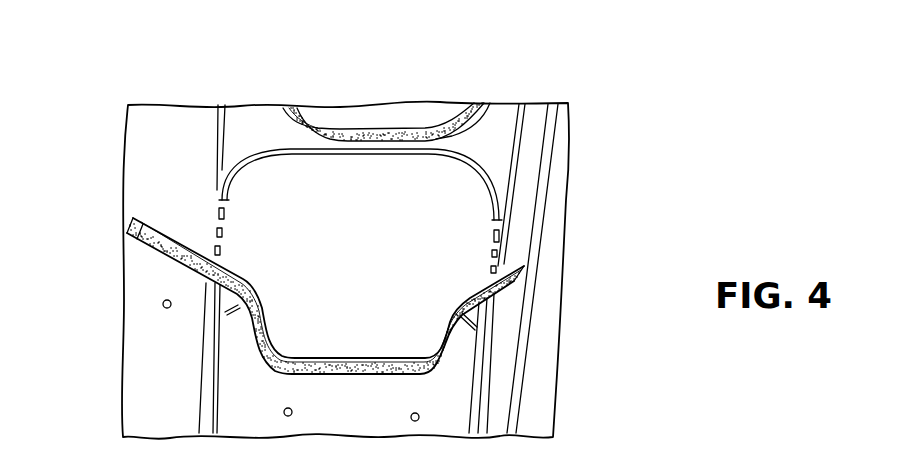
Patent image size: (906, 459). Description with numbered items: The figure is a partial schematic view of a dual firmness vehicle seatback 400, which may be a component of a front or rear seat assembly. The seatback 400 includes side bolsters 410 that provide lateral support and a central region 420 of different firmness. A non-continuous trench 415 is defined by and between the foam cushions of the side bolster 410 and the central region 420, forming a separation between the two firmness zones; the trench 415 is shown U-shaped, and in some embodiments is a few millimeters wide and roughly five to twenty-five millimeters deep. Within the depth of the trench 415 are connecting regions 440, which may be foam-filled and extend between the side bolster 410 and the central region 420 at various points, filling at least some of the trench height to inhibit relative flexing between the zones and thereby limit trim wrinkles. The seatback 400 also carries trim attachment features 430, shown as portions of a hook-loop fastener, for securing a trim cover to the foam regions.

The vehicle seatback 400 is at (181, 60).
The side bolster 410 is at (167, 170).
The non-continuous trench 415 is at (217, 235).
The central region 420 is at (360, 161).
The trim attachment feature 430 is at (466, 123).
The connecting region 440 is at (218, 223).